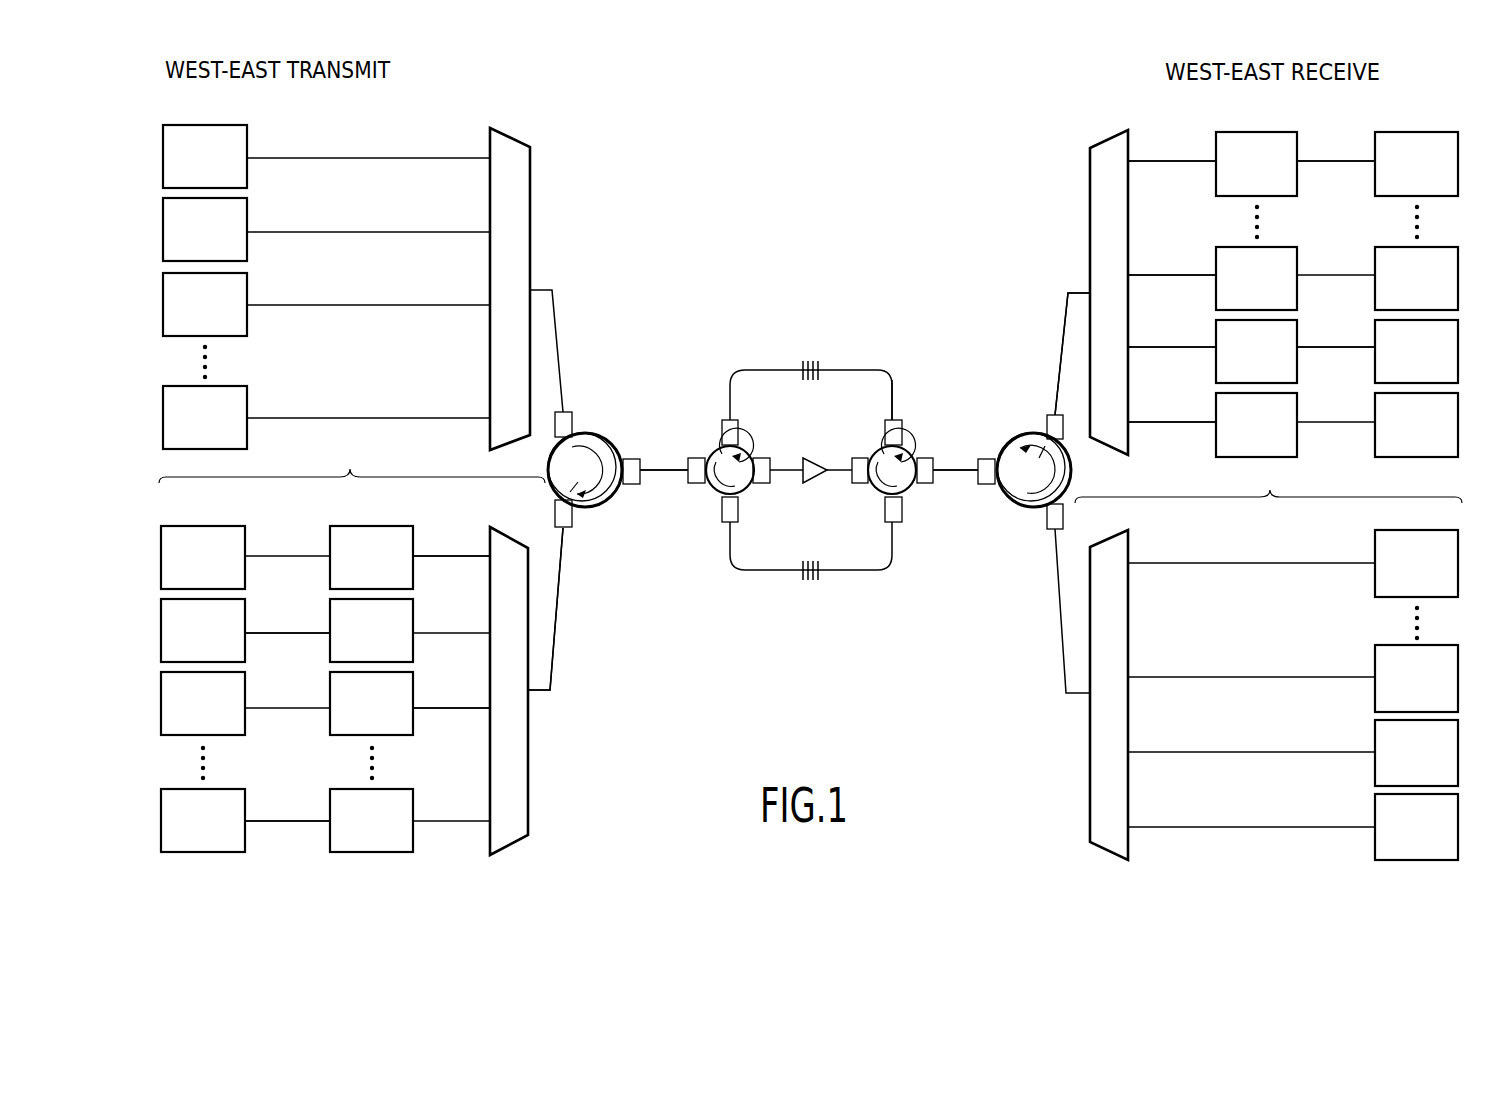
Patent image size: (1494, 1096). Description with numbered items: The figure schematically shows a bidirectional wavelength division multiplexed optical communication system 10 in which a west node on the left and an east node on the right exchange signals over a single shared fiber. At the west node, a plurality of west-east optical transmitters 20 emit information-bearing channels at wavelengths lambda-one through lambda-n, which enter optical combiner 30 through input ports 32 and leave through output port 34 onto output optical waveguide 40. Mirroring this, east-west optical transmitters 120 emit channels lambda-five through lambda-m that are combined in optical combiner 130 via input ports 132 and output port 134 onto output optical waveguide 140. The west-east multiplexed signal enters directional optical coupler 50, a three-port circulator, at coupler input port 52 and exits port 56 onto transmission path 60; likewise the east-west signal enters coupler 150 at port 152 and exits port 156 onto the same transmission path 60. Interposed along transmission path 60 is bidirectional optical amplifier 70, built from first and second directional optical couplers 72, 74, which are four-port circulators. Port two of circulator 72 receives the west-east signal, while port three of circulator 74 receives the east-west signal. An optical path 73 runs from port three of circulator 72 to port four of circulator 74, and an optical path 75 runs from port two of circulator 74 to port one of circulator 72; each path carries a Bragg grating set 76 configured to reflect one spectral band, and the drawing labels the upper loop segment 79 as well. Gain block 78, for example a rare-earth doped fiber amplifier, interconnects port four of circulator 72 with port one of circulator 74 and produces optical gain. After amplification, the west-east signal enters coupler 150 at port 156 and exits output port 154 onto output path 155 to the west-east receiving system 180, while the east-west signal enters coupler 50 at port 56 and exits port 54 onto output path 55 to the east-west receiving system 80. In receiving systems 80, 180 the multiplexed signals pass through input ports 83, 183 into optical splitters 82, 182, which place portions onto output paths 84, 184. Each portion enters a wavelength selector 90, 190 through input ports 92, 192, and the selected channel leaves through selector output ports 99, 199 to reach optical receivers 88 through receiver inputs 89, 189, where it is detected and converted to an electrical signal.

The bidirectional optical communication system 10 is at (806, 700).
The west-east optical transmitters 20 is at (244, 140).
The optical combiner 30 is at (506, 149).
The input ports 32 is at (490, 162).
The output port 34 is at (532, 290).
The output optical waveguide 40 is at (557, 346).
The directional optical coupler 50 is at (608, 415).
The coupler input port 52 is at (566, 412).
The coupler port 54 is at (568, 528).
The output path 55 is at (557, 605).
The coupler port 56 is at (632, 459).
The transmission path 60 is at (665, 472).
The bidirectional optical amplifier 70 is at (807, 447).
The first directional optical coupler 72 is at (741, 458).
The optical path 73 is at (884, 374).
The second directional optical coupler 74 is at (884, 456).
The optical path 75 is at (735, 566).
The Bragg grating sets 76 is at (810, 360).
The gain block 78 is at (815, 477).
The upper loop fiber 79 is at (737, 374).
The east-west receiving system 80 is at (810, 492).
The optical splitter 82 is at (546, 816).
The input port 83 is at (531, 694).
The output paths 84 is at (490, 558).
The optical receivers 88 is at (245, 535).
The receiver inputs 89 is at (250, 546).
The wavelength selector 90 is at (405, 538).
The input ports 92 is at (416, 561).
The selector output ports 99 is at (333, 630).
The east-west optical transmitters 120 is at (1376, 547).
The optical combiner 130 is at (1110, 774).
The input ports 132 is at (1128, 566).
The output port 134 is at (1088, 695).
The output optical waveguide 140 is at (1062, 625).
The directional optical coupler 150 is at (1001, 416).
The coupler input port 152 is at (1053, 529).
The output port 154 is at (1054, 415).
The output path 155 is at (1065, 313).
The coupler port 156 is at (986, 485).
The west-east receiving system 180 is at (1442, 141).
The optical splitter 182 is at (1070, 218).
The input port 183 is at (1090, 292).
The output paths 184 is at (1128, 163).
The receiver inputs 189 is at (1374, 161).
The wavelength selector 190 is at (1278, 141).
The input ports 192 is at (1216, 158).
The selector output ports 199 is at (1302, 163).